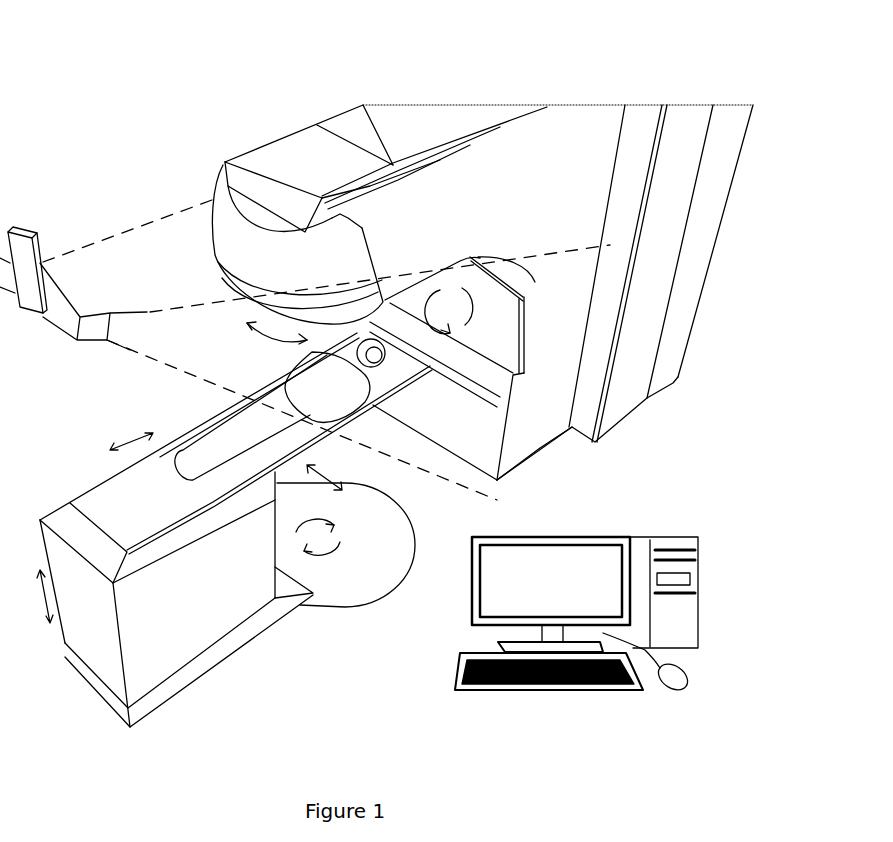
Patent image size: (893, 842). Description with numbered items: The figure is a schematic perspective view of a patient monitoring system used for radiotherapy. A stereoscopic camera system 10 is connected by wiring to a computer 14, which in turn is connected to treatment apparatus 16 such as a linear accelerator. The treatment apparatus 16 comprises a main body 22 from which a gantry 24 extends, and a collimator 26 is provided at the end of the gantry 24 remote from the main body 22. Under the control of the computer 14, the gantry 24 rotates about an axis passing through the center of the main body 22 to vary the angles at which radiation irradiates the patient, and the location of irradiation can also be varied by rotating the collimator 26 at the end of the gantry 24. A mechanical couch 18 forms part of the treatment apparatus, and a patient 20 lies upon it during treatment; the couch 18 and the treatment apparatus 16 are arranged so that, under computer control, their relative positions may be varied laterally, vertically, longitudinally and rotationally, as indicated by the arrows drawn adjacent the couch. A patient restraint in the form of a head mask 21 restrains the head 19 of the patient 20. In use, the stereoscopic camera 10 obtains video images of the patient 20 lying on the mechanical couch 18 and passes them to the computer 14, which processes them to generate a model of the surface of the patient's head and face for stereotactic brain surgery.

The stereoscopic camera system 10 is at (17, 230).
The computer 14 is at (597, 530).
The treatment apparatus 16 is at (422, 128).
The mechanical couch 18 is at (110, 672).
The head 19 is at (387, 330).
The patient 20 is at (295, 372).
The head mask 21 is at (383, 390).
The main body 22 is at (703, 300).
The gantry 24 is at (503, 197).
The collimator 26 is at (305, 300).